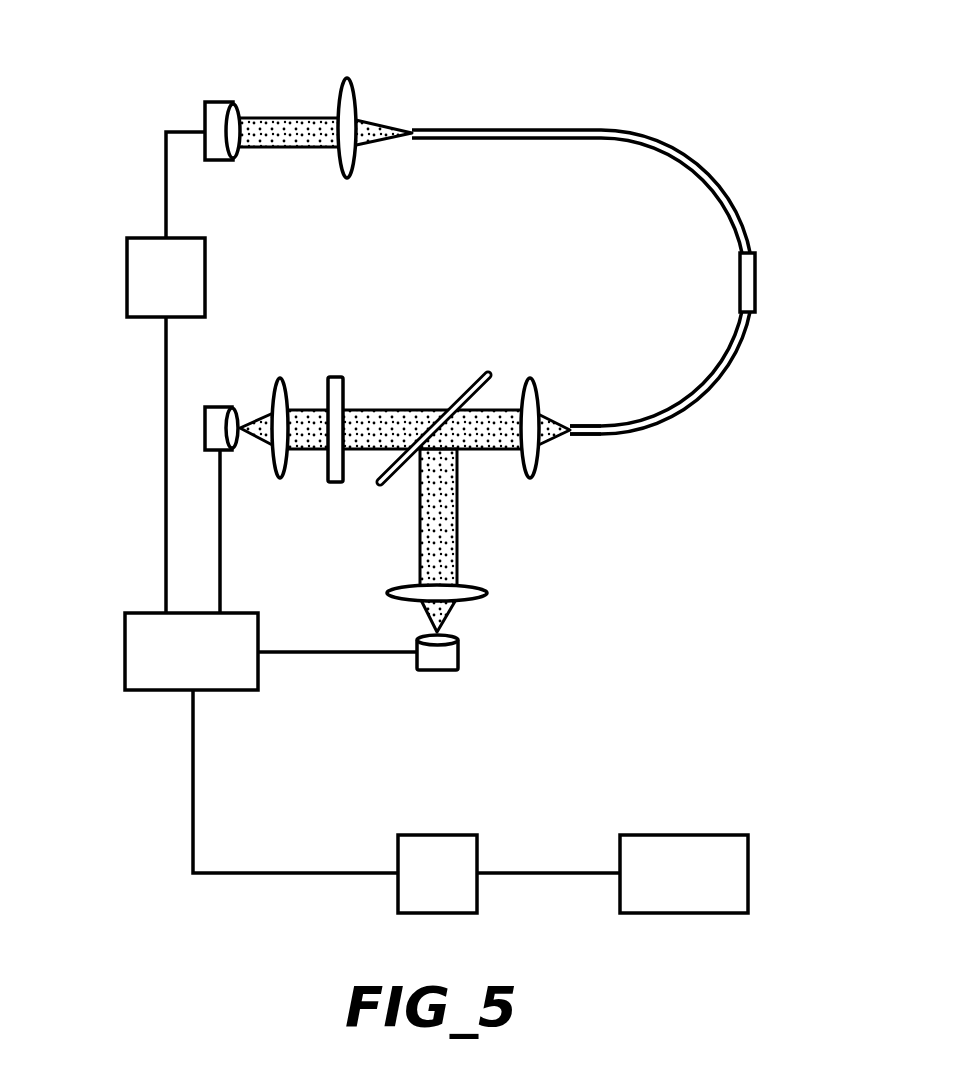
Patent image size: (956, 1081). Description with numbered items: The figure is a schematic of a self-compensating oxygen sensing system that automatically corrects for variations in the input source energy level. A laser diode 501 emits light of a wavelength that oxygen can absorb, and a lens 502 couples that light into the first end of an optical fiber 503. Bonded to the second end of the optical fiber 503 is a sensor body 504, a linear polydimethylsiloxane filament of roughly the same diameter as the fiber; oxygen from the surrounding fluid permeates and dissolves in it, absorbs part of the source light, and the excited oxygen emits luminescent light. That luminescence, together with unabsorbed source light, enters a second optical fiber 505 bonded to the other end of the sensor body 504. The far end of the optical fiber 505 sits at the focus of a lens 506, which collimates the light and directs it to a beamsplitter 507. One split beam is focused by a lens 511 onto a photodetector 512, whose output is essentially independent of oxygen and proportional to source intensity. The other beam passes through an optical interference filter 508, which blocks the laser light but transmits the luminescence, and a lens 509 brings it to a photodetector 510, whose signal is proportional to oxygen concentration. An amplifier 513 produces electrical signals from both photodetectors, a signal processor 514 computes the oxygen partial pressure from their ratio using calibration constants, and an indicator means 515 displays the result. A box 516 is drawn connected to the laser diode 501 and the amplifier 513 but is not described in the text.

The laser diode 501 is at (227, 103).
The lens 502 is at (357, 107).
The optical fiber 503 is at (597, 128).
The sensor body 504 is at (756, 287).
The optical fiber 505 is at (672, 430).
The lens 506 is at (533, 478).
The beamsplitter 507 is at (488, 375).
The optical interference filter 508 is at (343, 378).
The lens 509 is at (278, 378).
The photodetector 510 is at (228, 452).
The lens 511 is at (485, 600).
The photodetector 512 is at (437, 672).
The amplifier 513 is at (145, 692).
The signal processor 514 is at (397, 845).
The indicator means 515 is at (710, 835).
The light source driver 516 is at (138, 318).